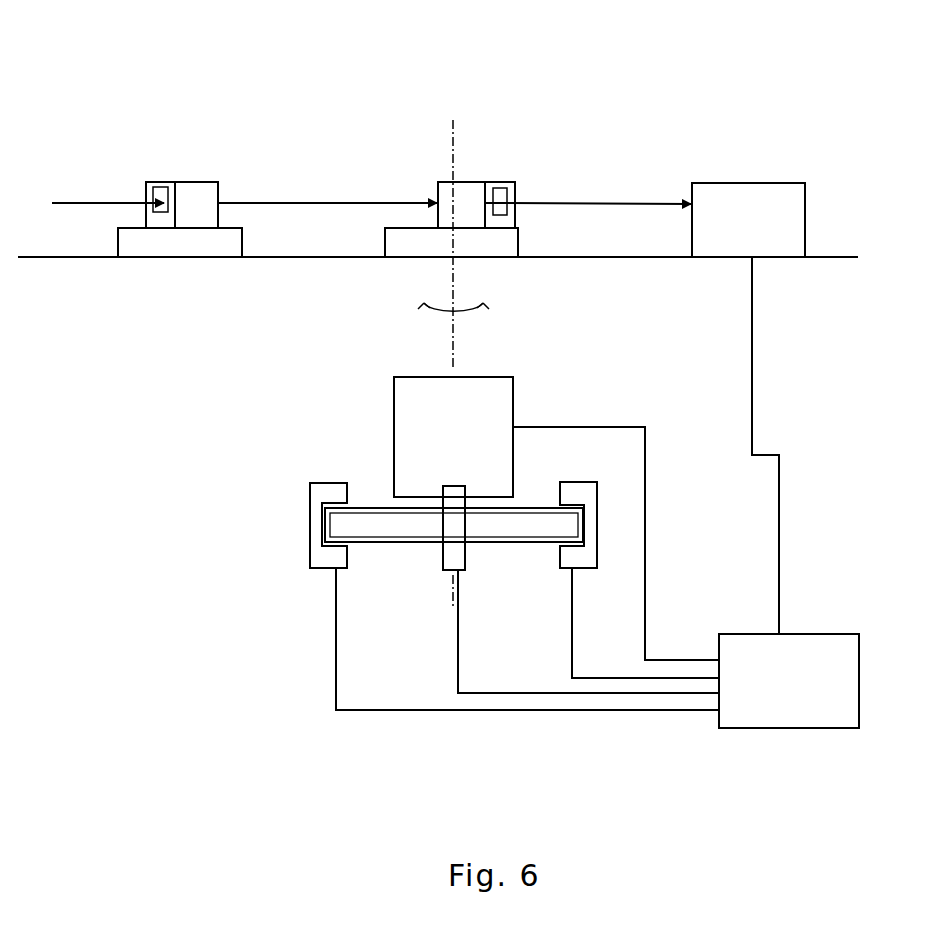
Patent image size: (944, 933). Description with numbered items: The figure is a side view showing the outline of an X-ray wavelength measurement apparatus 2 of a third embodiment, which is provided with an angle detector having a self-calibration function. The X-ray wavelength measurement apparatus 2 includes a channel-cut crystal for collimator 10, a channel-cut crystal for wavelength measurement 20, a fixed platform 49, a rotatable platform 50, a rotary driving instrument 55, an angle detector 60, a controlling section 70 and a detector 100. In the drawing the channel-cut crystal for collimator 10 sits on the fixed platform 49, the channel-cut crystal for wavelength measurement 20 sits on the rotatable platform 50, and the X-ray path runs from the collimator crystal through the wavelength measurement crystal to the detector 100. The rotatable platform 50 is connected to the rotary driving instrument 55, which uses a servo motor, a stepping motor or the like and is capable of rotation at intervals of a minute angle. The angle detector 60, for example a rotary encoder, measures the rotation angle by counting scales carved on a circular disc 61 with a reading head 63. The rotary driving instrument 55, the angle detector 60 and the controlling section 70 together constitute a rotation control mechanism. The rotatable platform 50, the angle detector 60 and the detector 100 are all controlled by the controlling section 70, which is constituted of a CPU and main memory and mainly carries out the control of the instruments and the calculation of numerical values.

The X-ray wavelength measurement apparatus 2 is at (437, 80).
The channel-cut crystal for collimator 10 is at (192, 182).
The channel-cut crystal for wavelength measurement 20 is at (475, 182).
The fixed platform 49 is at (242, 240).
The rotatable platform 50 is at (518, 243).
The rotary driving instrument 55 is at (513, 397).
The angle detector 60 is at (482, 580).
The circular disc 61 is at (514, 542).
The reading head 63 is at (347, 566).
The controlling section 70 is at (804, 634).
The detector 100 is at (748, 183).